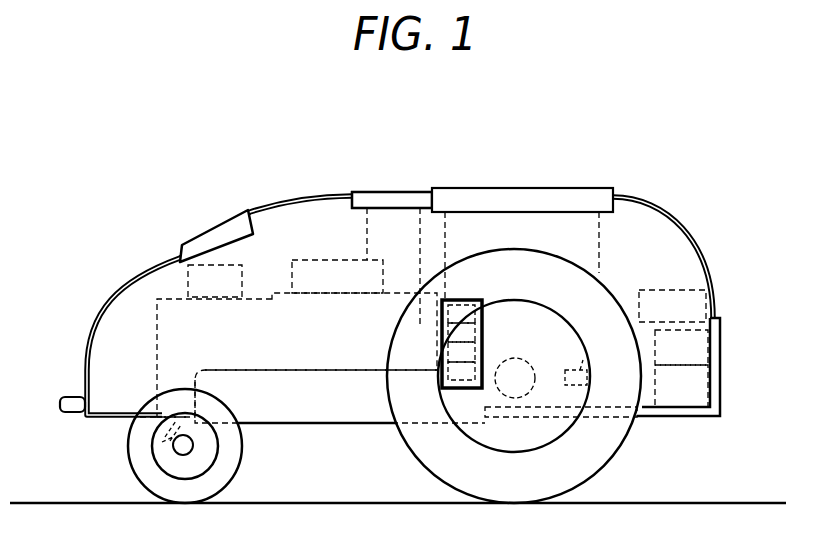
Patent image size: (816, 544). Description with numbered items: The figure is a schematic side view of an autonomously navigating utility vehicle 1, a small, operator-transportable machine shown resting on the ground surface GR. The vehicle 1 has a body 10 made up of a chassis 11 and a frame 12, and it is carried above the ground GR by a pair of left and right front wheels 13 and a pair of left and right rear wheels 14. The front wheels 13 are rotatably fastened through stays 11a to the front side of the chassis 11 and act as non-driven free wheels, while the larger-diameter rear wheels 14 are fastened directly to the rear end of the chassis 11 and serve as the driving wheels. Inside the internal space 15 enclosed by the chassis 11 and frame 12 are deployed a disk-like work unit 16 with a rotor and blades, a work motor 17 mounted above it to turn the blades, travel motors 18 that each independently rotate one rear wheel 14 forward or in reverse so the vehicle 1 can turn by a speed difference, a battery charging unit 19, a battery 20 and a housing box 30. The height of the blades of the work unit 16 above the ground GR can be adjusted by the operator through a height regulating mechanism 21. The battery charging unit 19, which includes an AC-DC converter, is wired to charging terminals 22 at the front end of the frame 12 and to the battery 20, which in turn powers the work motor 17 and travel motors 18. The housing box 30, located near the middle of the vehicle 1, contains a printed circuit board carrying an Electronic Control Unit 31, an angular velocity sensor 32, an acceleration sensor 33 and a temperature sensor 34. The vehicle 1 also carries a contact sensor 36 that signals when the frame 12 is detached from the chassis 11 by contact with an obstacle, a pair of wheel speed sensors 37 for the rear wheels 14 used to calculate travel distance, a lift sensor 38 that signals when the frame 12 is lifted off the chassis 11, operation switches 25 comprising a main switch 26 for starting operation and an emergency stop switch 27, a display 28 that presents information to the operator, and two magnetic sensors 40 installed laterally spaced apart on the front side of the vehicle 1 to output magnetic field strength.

The autonomously navigating utility vehicle 1 is at (666, 203).
The body 10 is at (726, 367).
The chassis 11 is at (783, 353).
The stays 11a is at (162, 442).
The frame 12 is at (719, 323).
The front wheels 13 is at (135, 473).
The rear wheels 14 is at (417, 455).
The internal space 15 is at (686, 252).
The work unit 16 is at (291, 409).
The work motor 17 is at (313, 341).
The travel motors 18 is at (515, 356).
The battery charging unit 19 is at (670, 360).
The battery 20 is at (670, 400).
The height regulating mechanism 21 is at (325, 288).
The charging terminals 22 is at (75, 396).
The operation switches 25 is at (396, 191).
The main switch 26 is at (392, 200).
The emergency stop switch 27 is at (392, 200).
The display 28 is at (525, 188).
The housing box 30 is at (483, 314).
The Electronic Control Unit (ECU) 31 is at (447, 322).
The angular velocity sensor 32 is at (447, 345).
The acceleration sensor 33 is at (447, 372).
The temperature sensor 34 is at (450, 392).
The contact sensor 36 is at (203, 294).
The wheel speed sensors 37 is at (586, 366).
The lift sensor 38 is at (660, 319).
The magnetic sensors 40 is at (218, 212).
The ground surface GR is at (656, 502).